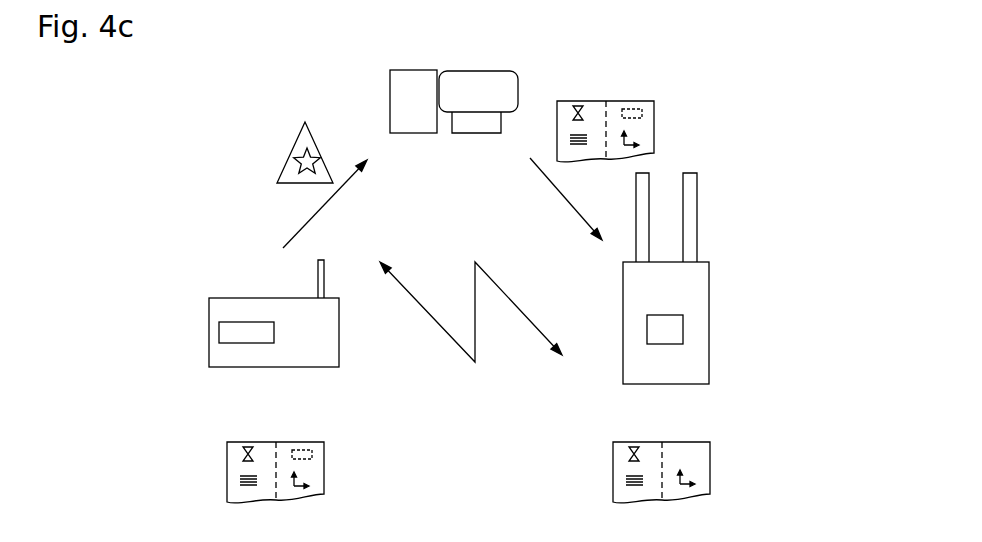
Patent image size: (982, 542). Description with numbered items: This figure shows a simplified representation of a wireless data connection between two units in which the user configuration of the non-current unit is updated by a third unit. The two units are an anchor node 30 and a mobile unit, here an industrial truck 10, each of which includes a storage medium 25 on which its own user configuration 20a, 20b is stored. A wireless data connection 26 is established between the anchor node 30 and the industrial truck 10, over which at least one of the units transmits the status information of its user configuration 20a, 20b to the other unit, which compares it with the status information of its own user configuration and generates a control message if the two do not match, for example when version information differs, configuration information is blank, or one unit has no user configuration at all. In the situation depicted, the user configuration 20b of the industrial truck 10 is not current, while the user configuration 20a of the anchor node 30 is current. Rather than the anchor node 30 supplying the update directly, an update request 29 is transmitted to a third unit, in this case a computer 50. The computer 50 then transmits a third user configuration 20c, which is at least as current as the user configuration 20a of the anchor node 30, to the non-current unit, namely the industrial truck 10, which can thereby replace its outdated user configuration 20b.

The industrial truck 10 is at (709, 262).
The user configuration 20a is at (227, 479).
The user configuration 20b is at (709, 472).
The third user configuration 20c is at (655, 122).
The storage medium 25 is at (665, 332).
The wireless data connection 26 is at (513, 298).
The update request 29 is at (292, 160).
The anchor node 30 is at (209, 349).
The computer 50 is at (390, 92).